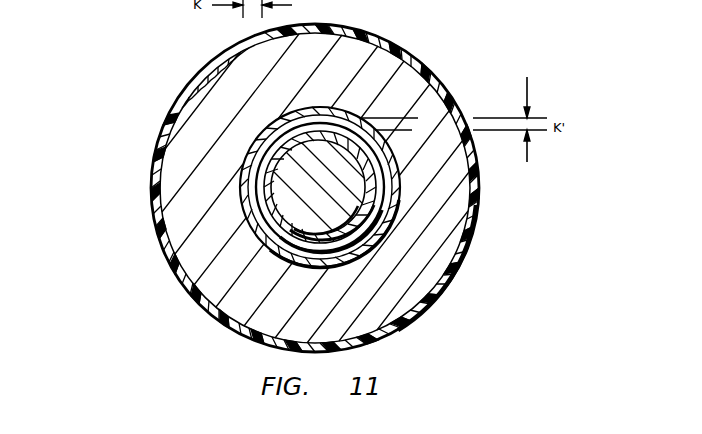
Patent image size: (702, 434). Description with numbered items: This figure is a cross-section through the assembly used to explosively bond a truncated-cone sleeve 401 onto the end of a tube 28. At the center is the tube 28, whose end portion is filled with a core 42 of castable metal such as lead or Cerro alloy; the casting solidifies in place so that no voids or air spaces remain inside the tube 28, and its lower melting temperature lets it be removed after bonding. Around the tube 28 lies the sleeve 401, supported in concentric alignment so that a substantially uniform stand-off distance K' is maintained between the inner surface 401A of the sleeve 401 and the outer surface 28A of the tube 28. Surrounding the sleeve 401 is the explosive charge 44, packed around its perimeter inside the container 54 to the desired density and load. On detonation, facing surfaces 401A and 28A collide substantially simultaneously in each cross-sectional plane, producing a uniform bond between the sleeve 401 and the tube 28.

The tube 28 is at (397, 325).
The outer surface of tube 28A is at (340, 209).
The core 42 is at (362, 242).
The explosive charge 44 is at (408, 83).
The container 54 is at (200, 72).
The sleeve 401 is at (390, 202).
The inner surface of sleeve 401A is at (250, 163).